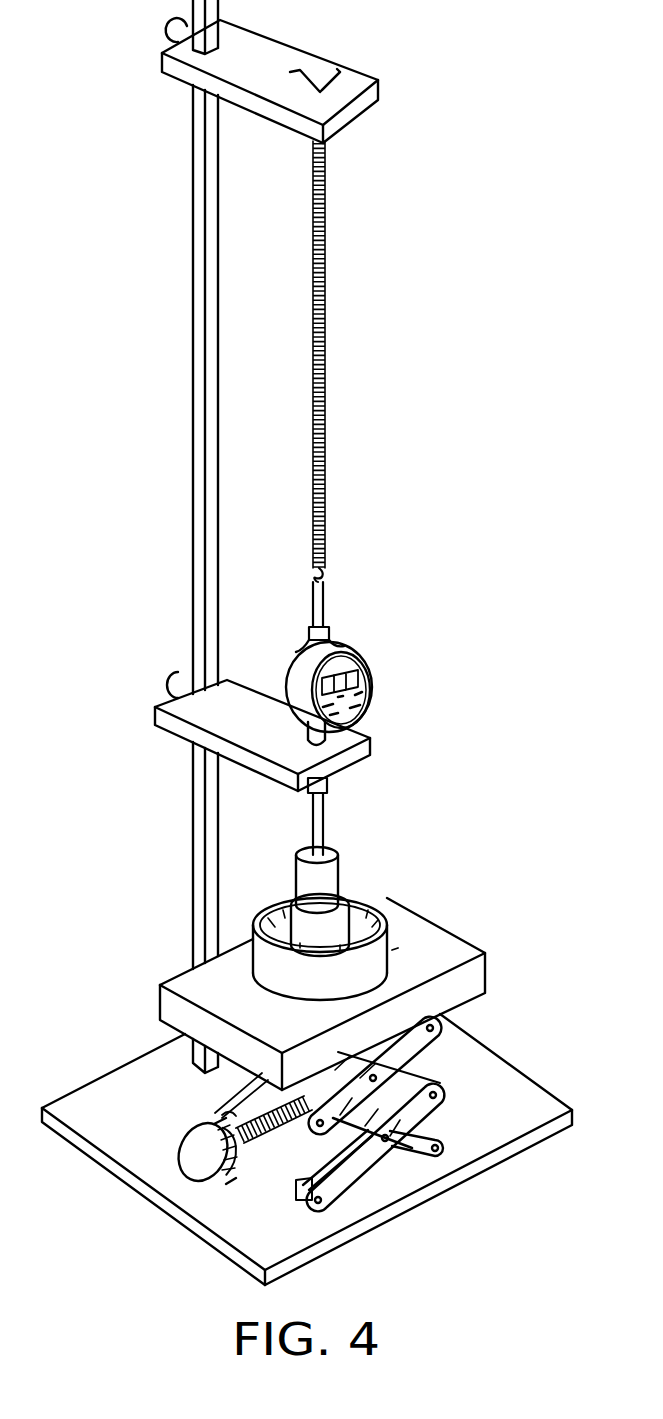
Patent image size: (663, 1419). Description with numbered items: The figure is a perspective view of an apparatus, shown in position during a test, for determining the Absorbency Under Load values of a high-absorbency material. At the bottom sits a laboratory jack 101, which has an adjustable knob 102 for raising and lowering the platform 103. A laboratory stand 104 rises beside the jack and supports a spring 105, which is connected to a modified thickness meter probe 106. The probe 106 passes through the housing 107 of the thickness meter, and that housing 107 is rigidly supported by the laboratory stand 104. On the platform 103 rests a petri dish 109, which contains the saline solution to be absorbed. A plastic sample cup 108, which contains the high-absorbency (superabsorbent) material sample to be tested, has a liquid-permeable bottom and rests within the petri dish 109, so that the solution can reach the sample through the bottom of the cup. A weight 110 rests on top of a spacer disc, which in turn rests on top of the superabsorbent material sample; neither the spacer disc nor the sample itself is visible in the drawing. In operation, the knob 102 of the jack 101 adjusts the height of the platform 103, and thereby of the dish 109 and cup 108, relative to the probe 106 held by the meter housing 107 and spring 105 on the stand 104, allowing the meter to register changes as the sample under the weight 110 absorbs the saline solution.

The laboratory jack 101 is at (417, 1047).
The adjustable knob 102 is at (190, 1138).
The platform 103 is at (490, 947).
The laboratory stand 104 is at (192, 500).
The spring 105 is at (326, 288).
The modified thickness meter probe 106 is at (326, 593).
The housing 107 is at (373, 663).
The plastic sample cup 108 is at (370, 895).
The petri dish 109 is at (392, 950).
The weight 110 is at (338, 855).